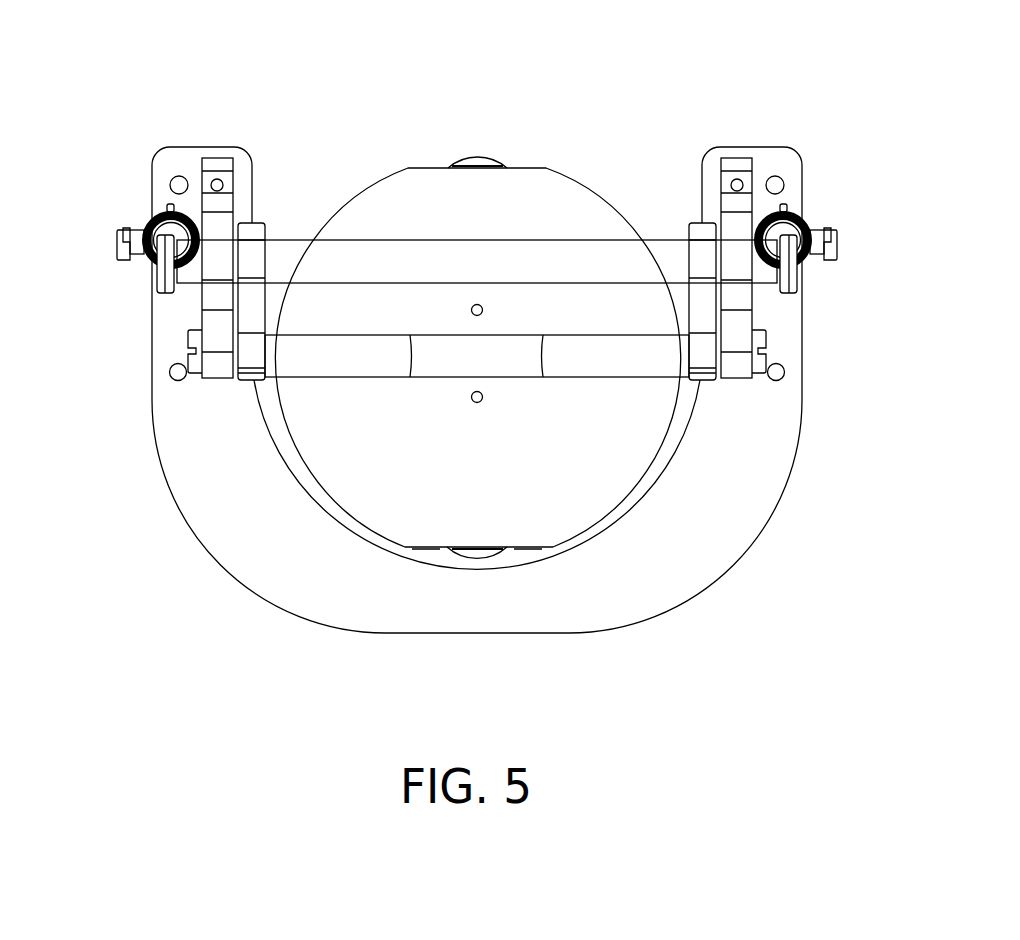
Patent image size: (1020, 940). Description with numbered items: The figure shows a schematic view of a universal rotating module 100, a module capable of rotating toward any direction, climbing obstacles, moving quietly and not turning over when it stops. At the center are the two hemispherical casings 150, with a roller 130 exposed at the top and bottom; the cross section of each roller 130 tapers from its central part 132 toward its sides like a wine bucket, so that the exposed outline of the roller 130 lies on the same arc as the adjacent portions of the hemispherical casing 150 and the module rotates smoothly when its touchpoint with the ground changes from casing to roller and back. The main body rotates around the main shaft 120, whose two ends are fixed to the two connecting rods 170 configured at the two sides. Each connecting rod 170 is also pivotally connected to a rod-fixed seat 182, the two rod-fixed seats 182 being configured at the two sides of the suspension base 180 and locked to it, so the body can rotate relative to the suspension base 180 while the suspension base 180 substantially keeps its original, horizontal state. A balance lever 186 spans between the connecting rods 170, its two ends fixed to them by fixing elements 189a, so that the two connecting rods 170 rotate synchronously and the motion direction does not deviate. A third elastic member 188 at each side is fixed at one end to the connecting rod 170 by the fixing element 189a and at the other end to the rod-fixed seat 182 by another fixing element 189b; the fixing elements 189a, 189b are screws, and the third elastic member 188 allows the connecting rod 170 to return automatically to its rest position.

The universal rotating module 100 is at (237, 67).
The main shaft 120 is at (325, 363).
The roller 130 is at (477, 396).
The central part 132 is at (477, 157).
The hemispherical casing 150 is at (388, 198).
The connecting rod 170 is at (250, 308).
The suspension base 180 is at (635, 590).
The rod-fixed seat 182 is at (220, 367).
The balance lever 186 is at (585, 268).
The third elastic member 188 is at (160, 210).
The fixing element 189a is at (163, 290).
The fixing element 189b is at (127, 260).